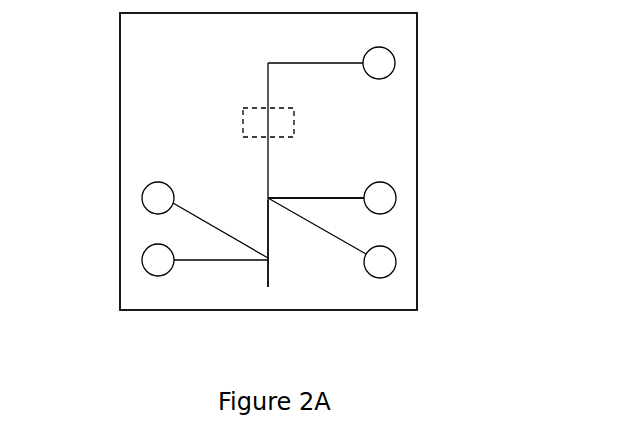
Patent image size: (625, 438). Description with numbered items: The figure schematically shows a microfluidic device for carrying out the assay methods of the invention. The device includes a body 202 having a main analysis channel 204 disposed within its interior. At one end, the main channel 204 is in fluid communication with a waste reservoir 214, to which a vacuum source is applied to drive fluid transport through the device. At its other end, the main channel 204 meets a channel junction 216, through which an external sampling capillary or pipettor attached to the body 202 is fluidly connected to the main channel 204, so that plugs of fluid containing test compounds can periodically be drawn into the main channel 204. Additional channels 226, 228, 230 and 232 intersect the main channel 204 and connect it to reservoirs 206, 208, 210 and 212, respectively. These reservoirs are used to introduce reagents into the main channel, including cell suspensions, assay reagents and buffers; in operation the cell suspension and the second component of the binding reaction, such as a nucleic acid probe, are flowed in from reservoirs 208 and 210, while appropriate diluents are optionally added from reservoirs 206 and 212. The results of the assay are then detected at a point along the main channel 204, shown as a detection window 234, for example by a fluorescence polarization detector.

The body 202 is at (119, 67).
The main analysis channel 204 is at (267, 79).
The reservoir 206 is at (141, 198).
The reservoir 208 is at (141, 262).
The reservoir 210 is at (397, 263).
The reservoir 212 is at (396, 196).
The waste reservoir 214 is at (395, 63).
The channel junction 216 is at (268, 287).
The channel 226 is at (213, 218).
The channel 228 is at (215, 268).
The channel 230 is at (342, 253).
The channel 232 is at (323, 197).
The detection window 234 is at (242, 118).